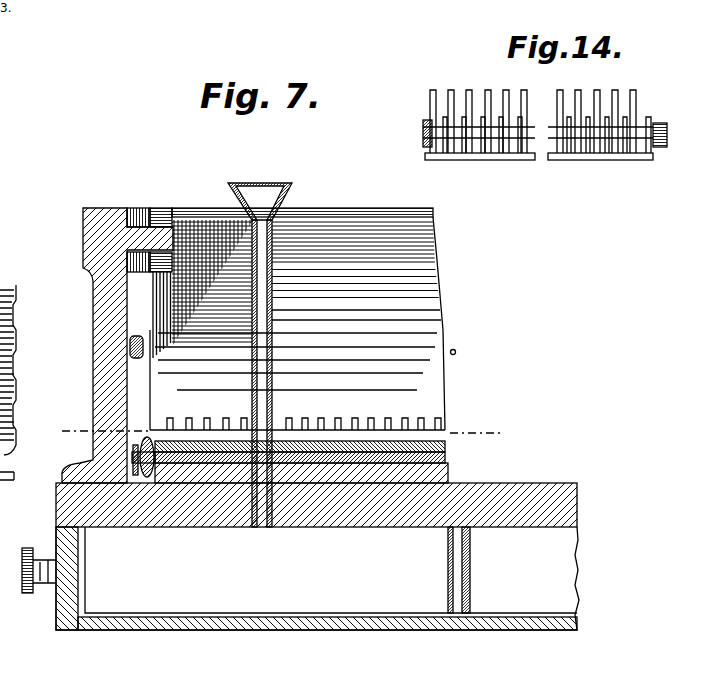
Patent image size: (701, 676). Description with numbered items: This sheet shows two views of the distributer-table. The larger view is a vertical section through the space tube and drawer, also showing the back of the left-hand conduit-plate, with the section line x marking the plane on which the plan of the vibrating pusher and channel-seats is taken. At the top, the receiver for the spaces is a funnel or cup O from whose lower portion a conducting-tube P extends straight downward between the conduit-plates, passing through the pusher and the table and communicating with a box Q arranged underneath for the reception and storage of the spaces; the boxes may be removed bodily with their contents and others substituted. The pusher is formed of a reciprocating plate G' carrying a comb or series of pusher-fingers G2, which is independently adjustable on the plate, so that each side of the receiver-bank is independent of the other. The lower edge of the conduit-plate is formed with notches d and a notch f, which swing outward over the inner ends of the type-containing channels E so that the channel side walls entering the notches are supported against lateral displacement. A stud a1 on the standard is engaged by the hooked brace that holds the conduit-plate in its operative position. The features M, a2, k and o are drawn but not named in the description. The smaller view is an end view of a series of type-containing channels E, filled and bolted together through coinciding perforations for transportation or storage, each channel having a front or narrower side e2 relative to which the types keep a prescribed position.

In FIG. 7, the funnel or cup O is at (260, 342).
In FIG. 7, the side wall of casing M is at (117, 345).
In FIG. 7, the conducting-tube P is at (296, 371).
In FIG. 7, the stud or projection a1 is at (169, 318).
In FIG. 7, the plate edge a2 is at (171, 389).
In FIG. 7, the notch f is at (133, 337).
In FIG. 7, the pin k is at (160, 348).
In FIG. 7, the notch d is at (297, 417).
In FIG. 7, the section line x is at (277, 429).
In FIG. 7, the comb or series of pusher-fingers G2 is at (447, 447).
In FIG. 7, the reciprocating plate G' is at (322, 472).
In FIG. 7, the box Q is at (300, 556).
In FIG. 7, the small opening o is at (453, 352).
In FIG. 7, the type-containing channel E is at (14, 382).
In FIG. 14, the type-containing channel E is at (545, 114).
In FIG. 14, the front or narrower side e2 is at (652, 115).